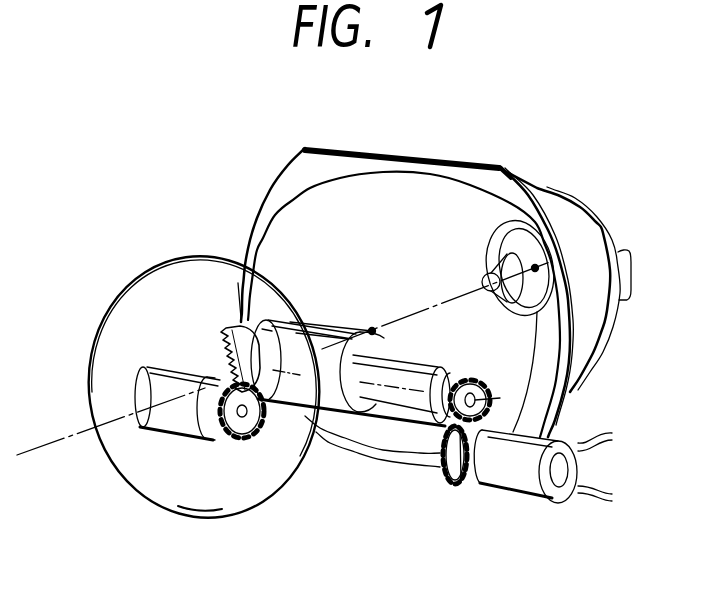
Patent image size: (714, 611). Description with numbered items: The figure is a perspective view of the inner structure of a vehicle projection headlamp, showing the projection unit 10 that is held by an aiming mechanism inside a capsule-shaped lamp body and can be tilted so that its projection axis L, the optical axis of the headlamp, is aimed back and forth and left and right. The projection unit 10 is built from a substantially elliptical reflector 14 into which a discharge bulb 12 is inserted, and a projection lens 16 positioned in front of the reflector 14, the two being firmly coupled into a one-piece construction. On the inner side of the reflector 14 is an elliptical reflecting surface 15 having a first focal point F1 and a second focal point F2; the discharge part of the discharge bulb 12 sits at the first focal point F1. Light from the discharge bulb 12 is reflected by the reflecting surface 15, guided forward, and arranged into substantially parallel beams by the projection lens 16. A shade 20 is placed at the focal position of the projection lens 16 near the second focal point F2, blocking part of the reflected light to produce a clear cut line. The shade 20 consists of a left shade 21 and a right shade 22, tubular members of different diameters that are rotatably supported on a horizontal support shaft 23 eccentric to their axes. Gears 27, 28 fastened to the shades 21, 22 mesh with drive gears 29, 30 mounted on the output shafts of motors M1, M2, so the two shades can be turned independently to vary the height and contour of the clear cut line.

The projection unit 10 is at (317, 136).
The discharge bulb 12 is at (527, 262).
The reflector 14 is at (571, 240).
The elliptical reflecting surface 15 is at (434, 196).
The projection lens 16 is at (190, 258).
The shade 20 is at (426, 517).
The left shade 21 is at (403, 422).
The right shade 22 is at (340, 422).
The horizontal support shaft 23 is at (404, 356).
The gear 27 is at (483, 373).
The gear 28 is at (228, 326).
The drive gear 29 is at (243, 442).
The drive gear 30 is at (460, 484).
The first focal point F1 is at (537, 265).
The second focal point F2 is at (372, 328).
The projection axis L is at (42, 440).
The motor M1 is at (510, 487).
The motor M2 is at (160, 433).